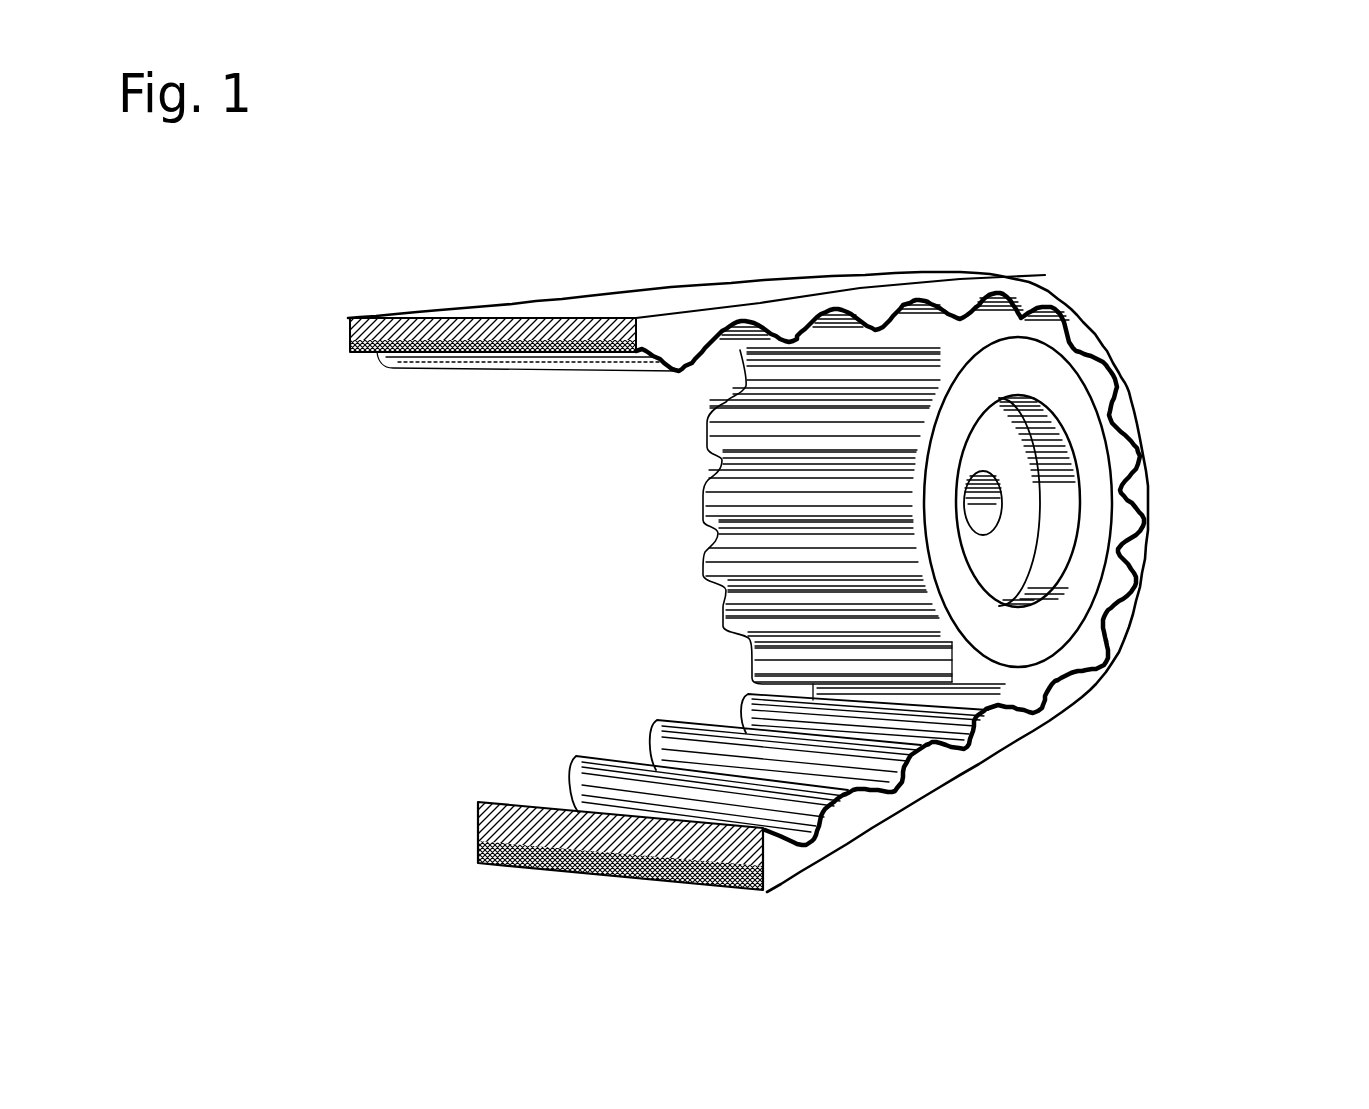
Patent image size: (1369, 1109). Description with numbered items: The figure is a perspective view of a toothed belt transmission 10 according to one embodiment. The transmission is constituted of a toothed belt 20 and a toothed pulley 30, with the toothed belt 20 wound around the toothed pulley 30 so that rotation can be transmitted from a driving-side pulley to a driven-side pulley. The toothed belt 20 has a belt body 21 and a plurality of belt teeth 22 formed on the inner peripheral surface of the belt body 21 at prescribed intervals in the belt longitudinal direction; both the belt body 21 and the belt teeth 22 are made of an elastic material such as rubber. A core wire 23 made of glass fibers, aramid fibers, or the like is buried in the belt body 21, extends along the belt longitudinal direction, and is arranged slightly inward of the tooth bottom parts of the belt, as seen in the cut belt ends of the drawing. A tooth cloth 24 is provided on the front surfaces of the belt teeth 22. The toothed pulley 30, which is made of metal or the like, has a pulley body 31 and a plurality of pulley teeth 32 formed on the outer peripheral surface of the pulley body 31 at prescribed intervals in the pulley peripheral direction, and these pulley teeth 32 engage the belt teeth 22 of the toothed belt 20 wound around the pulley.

The toothed belt transmission 10 is at (442, 217).
The toothed belt 20 is at (1045, 289).
The belt body 21 is at (890, 806).
The belt teeth 22 is at (927, 763).
The core wire 23 is at (557, 867).
The tooth cloth 24 is at (803, 841).
The toothed pulley 30 is at (1073, 398).
The pulley body 31 is at (1094, 529).
The pulley teeth 32 is at (1124, 453).